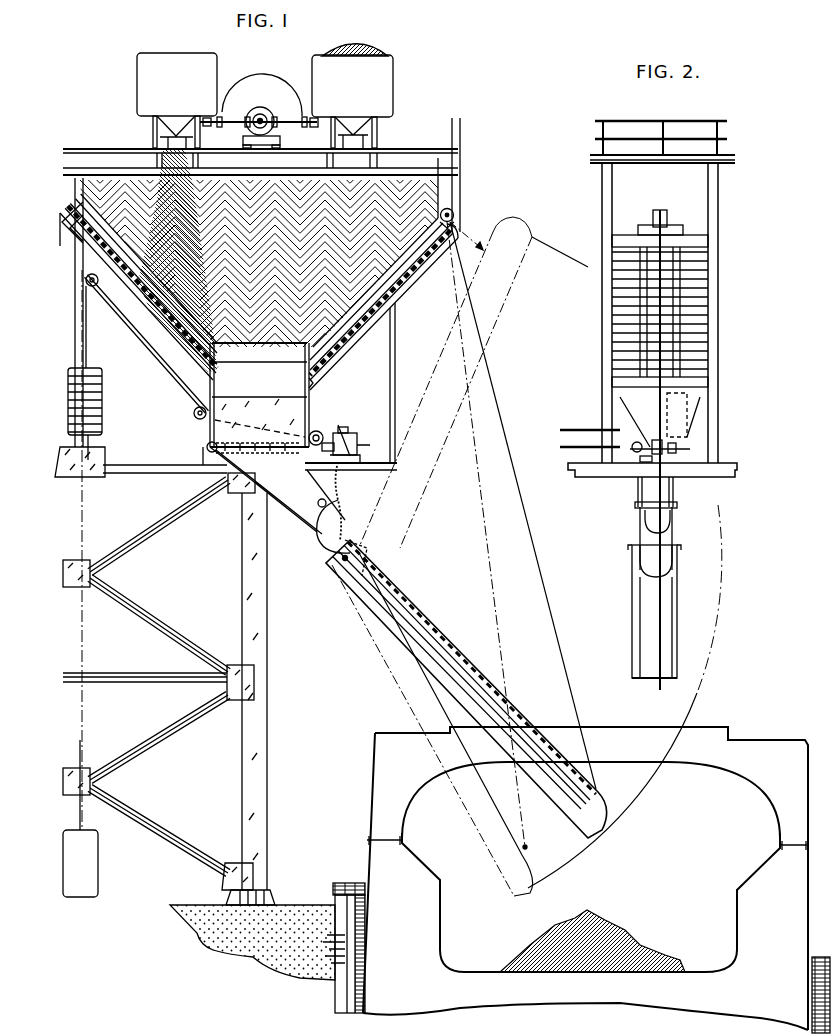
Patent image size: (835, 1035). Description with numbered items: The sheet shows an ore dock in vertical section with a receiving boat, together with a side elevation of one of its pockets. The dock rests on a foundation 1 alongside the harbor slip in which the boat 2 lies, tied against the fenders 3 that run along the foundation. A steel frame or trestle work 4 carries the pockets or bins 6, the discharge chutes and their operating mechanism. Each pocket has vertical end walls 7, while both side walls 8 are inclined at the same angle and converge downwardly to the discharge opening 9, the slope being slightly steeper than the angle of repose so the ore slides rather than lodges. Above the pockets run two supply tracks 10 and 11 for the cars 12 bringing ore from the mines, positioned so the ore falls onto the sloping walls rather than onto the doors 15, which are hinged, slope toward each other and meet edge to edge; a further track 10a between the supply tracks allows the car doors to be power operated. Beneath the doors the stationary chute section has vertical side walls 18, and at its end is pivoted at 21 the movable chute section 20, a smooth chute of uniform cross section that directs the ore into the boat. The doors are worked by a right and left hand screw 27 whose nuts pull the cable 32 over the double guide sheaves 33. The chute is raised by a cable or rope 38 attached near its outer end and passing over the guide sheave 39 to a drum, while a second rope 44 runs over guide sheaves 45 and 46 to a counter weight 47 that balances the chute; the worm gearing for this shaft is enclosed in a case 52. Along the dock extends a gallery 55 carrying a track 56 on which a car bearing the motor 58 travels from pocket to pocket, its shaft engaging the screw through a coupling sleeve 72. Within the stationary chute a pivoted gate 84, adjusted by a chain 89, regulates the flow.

In FIG. 1, the foundation 1 is at (205, 931).
In FIG. 1, the boat 2 is at (445, 935).
In FIG. 1, the fenders 3 is at (345, 884).
In FIG. 1, the frame or trestle work 4 is at (268, 672).
In FIG. 1, the pockets or bins 6 is at (215, 261).
In FIG. 1, the end walls 7 is at (260, 282).
In FIG. 2, the end walls 7 is at (710, 300).
In FIG. 1, the side walls 8 is at (108, 222).
In FIG. 1, the discharge opening 9 is at (259, 426).
In FIG. 1, the supply track 10 is at (374, 148).
In FIG. 1, the track 10a is at (281, 142).
In FIG. 1, the supply track 11 is at (153, 147).
In FIG. 1, the cars 12 is at (352, 96).
In FIG. 1, the doors 15 is at (259, 395).
In FIG. 2, the side walls 18 is at (673, 497).
In FIG. 1, the movable chute section 20 is at (449, 640).
In FIG. 2, the movable chute section 20 is at (677, 628).
In FIG. 1, the pivot 21 is at (331, 563).
In FIG. 1, the right and left hand screw 27 is at (143, 462).
In FIG. 1, the cable 32 is at (313, 383).
In FIG. 1, the double guide sheaves 33 is at (206, 448).
In FIG. 1, the cable or rope 38 is at (533, 544).
In FIG. 1, the guide sheave 39 is at (454, 213).
In FIG. 2, the guide sheave 39 is at (663, 212).
In FIG. 1, the cable or rope 44 is at (143, 343).
In FIG. 1, the guide sheave 45 is at (196, 418).
In FIG. 1, the guide sheave 46 is at (93, 287).
In FIG. 1, the counter weight 47 is at (102, 385).
In FIG. 1, the case 52 is at (323, 437).
In FIG. 1, the gallery 55 is at (361, 473).
In FIG. 1, the track 56 is at (352, 458).
In FIG. 1, the motor 58 is at (262, 111).
In FIG. 1, the coupling sleeve 72 is at (226, 128).
In FIG. 1, the gate 84 is at (319, 504).
In FIG. 1, the chain 89 is at (337, 484).